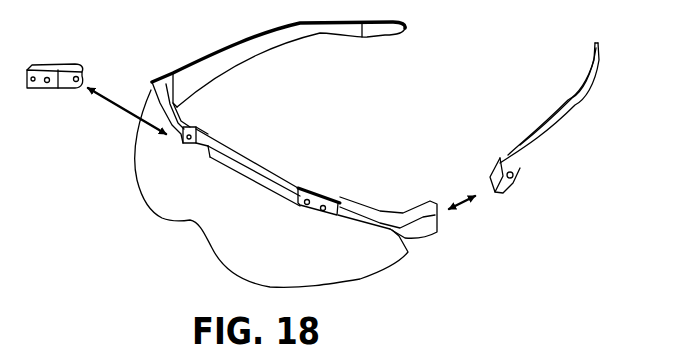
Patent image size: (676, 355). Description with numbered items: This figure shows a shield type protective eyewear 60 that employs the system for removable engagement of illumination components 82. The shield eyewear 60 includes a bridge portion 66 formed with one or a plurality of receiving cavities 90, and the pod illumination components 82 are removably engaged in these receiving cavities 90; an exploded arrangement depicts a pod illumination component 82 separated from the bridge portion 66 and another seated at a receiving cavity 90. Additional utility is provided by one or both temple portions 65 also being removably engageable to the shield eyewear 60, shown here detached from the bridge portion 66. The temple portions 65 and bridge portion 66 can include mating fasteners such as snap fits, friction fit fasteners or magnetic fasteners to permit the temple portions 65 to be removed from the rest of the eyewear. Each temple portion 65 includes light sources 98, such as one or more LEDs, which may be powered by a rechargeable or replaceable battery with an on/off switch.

The shield type eyewear 60 is at (167, 78).
The illumination components 82 is at (55, 89).
The receiving cavities 90 is at (207, 141).
The bridge portion 66 is at (263, 170).
The temple portions 65 is at (542, 138).
The light sources 98 is at (512, 182).